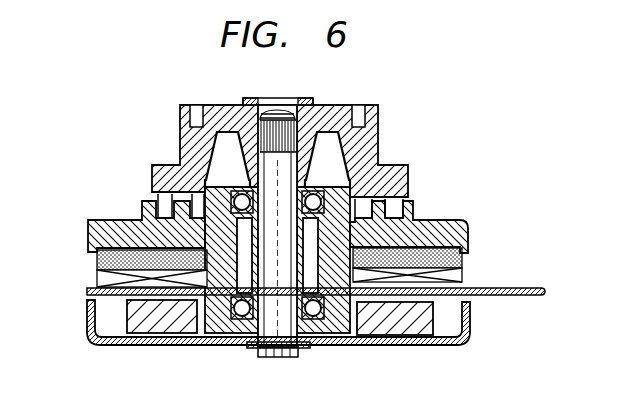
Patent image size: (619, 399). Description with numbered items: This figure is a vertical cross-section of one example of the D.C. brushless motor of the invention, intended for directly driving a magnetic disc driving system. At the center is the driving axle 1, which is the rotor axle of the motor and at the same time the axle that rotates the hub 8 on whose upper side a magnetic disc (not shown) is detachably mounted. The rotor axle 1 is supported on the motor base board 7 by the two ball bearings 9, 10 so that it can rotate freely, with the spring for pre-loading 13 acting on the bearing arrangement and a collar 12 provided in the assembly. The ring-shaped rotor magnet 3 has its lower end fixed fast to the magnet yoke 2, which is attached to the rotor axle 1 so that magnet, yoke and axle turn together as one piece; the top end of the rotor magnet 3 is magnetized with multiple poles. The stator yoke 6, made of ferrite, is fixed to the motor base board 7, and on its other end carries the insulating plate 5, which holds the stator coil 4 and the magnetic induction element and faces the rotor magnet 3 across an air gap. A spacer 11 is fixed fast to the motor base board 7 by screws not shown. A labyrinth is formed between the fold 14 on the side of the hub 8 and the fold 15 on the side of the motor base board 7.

The driving axle 1 is at (278, 323).
The magnet yoke 2 is at (374, 345).
The rotor magnet 3 is at (412, 330).
The stator coil 4 is at (460, 277).
The insulating plate 5 is at (513, 296).
The stator yoke 6 is at (460, 262).
The motor base board 7 is at (460, 222).
The hub 8 is at (190, 142).
The ball bearing 9 is at (320, 188).
The ball bearing 10 is at (323, 322).
The spacer 11 is at (120, 230).
The collar 12 is at (93, 262).
The spring for pre-loading 13 is at (225, 290).
The fold for a labyrinth 14 is at (166, 198).
The fold for a labyrinth 15 is at (415, 212).